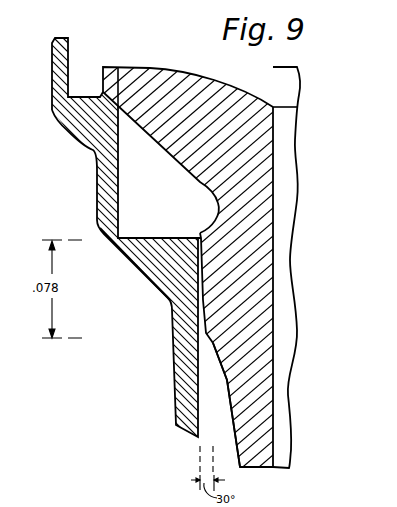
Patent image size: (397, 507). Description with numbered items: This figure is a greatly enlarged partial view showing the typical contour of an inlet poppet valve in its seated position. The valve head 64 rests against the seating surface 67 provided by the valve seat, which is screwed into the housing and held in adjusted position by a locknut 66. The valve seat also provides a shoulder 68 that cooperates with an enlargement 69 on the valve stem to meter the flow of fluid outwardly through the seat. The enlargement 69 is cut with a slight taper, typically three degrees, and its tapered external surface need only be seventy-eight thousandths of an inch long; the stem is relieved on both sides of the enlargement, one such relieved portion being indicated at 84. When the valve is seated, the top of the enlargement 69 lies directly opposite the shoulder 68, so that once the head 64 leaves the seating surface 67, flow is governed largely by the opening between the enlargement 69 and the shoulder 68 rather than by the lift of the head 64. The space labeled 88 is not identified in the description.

The head 64 is at (147, 68).
The locknut 66 is at (108, 183).
The seating surface 67 is at (99, 96).
The shoulder 68 is at (151, 268).
The enlargement 69 is at (204, 295).
The relieved portion of valve stem 84 is at (222, 414).
The cavity 88 is at (157, 207).